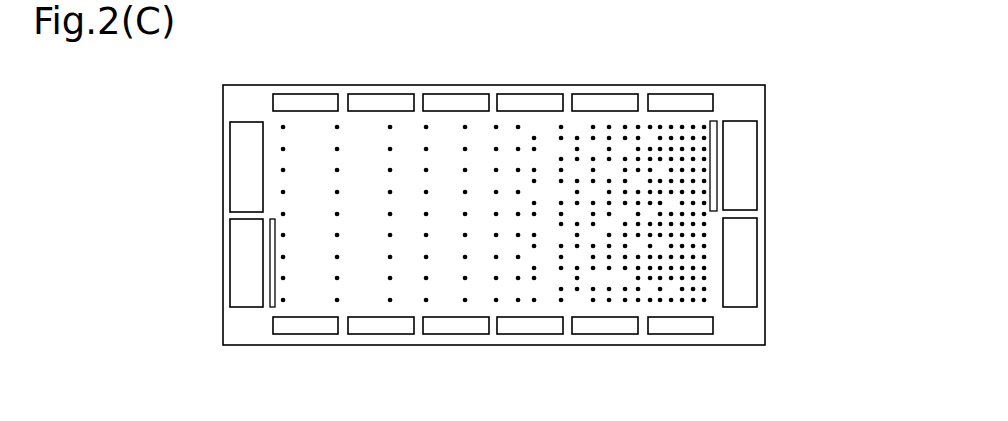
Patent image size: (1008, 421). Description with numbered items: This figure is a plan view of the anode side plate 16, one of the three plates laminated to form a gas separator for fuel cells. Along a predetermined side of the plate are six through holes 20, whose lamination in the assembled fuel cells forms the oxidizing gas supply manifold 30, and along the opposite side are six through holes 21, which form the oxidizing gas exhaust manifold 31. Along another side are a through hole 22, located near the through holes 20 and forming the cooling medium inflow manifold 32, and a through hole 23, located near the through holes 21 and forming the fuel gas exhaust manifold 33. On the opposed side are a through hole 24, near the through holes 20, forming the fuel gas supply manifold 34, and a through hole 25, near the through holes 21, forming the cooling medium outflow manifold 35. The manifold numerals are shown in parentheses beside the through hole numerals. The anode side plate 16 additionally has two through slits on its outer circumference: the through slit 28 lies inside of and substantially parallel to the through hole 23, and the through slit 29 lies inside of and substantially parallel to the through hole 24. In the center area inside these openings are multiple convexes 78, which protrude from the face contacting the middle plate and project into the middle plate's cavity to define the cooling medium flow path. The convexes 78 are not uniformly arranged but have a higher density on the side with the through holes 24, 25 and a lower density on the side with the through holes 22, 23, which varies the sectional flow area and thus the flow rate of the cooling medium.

The anode side plate 16 is at (481, 64).
The through holes 20 is at (493, 70).
The oxidizing gas supply manifold 30 is at (453, 102).
The through holes 21 is at (493, 361).
The oxidizing gas exhaust manifold 31 is at (528, 326).
The through hole 22 is at (187, 167).
The cooling medium inflow manifold 32 is at (248, 190).
The through hole 23 is at (187, 263).
The fuel gas exhaust manifold 33 is at (248, 288).
The through hole 24 is at (797, 165).
The fuel gas supply manifold 34 is at (740, 188).
The through hole 25 is at (797, 262).
The cooling medium outflow manifold 35 is at (740, 285).
The through slit 28 is at (273, 309).
The through slit 29 is at (713, 138).
The convexes 78 is at (660, 305).